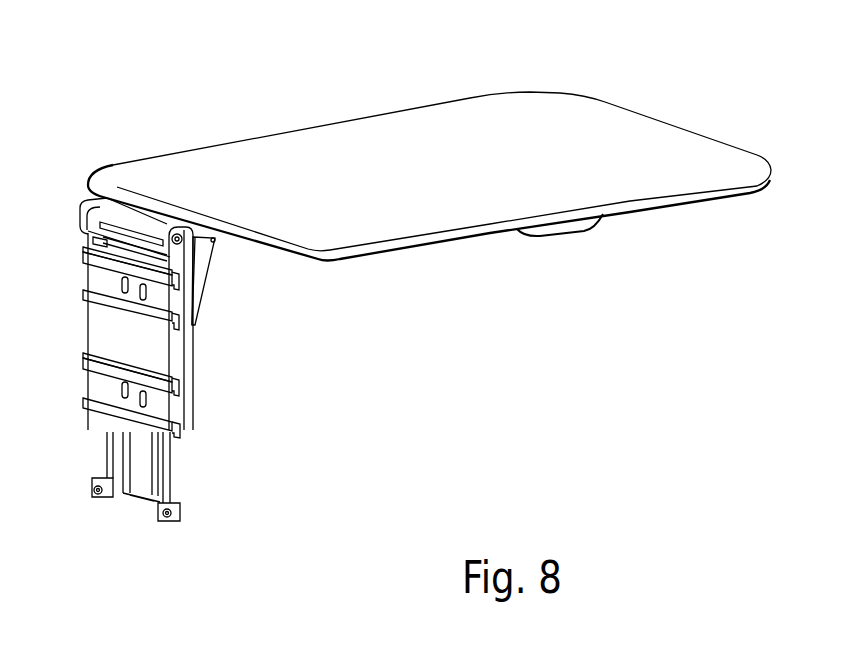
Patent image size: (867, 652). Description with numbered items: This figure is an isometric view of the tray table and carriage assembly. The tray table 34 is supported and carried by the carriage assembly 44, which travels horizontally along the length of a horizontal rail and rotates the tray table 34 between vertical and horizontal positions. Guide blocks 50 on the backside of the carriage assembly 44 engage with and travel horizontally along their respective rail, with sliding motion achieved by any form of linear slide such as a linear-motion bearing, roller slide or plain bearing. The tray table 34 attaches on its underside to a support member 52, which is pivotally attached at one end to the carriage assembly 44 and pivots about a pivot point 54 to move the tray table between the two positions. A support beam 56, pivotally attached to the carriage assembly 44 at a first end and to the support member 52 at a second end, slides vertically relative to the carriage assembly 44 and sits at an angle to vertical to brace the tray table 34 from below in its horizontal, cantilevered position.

The tray table 34 is at (410, 125).
The carriage assembly 44 is at (227, 357).
The guide blocks 50 is at (103, 279).
The support member 52 is at (130, 217).
The pivot point 54 is at (183, 241).
The support beam 56 is at (202, 290).